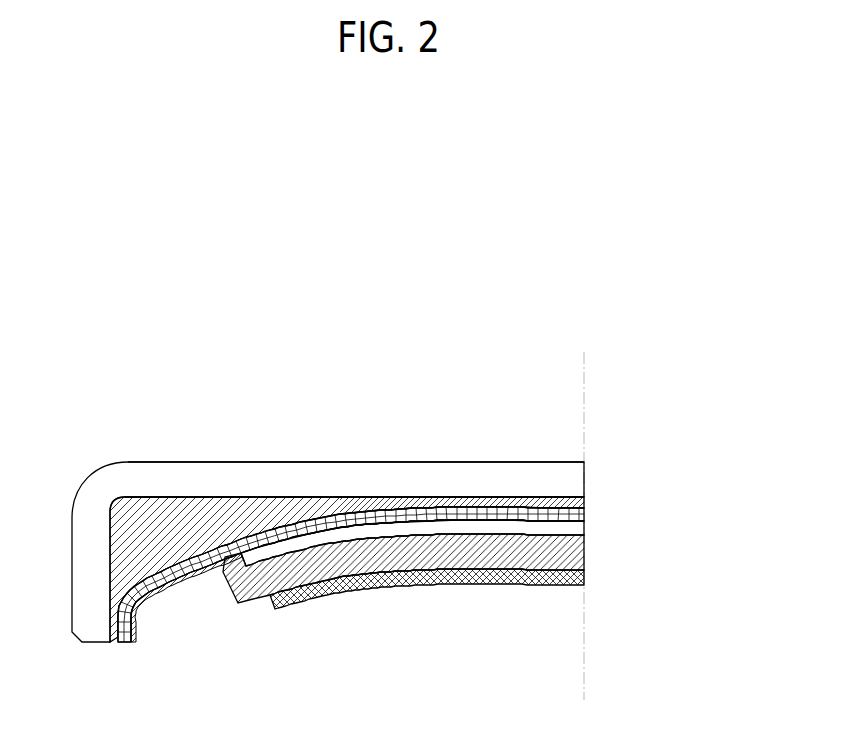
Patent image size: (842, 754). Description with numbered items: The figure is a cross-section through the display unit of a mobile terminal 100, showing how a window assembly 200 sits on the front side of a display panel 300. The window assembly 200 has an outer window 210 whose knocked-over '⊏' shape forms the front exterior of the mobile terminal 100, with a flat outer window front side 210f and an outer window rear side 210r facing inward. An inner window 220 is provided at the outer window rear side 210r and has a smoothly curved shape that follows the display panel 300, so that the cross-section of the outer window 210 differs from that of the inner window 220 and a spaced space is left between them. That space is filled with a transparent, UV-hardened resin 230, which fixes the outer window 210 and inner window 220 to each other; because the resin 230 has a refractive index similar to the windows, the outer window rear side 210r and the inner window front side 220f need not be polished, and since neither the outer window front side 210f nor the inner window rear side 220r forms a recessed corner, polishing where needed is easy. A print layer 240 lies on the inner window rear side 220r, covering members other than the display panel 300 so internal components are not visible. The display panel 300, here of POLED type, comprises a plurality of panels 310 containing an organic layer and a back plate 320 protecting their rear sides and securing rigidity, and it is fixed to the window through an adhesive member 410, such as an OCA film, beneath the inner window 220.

The mobile terminal 100 is at (62, 370).
The window assembly 200 is at (420, 525).
The outer window 210 is at (377, 507).
The outer window front side 210f is at (160, 462).
The outer window rear side 210r is at (212, 497).
The inner window 220 is at (400, 574).
The inner window front side 220f is at (141, 610).
The inner window rear side 220r is at (224, 557).
The resin 230 is at (571, 500).
The print layer 240 is at (178, 588).
The display panel 300 is at (494, 579).
The panels 310 is at (567, 558).
The back plate 320 is at (570, 577).
The adhesive member 410 is at (573, 530).